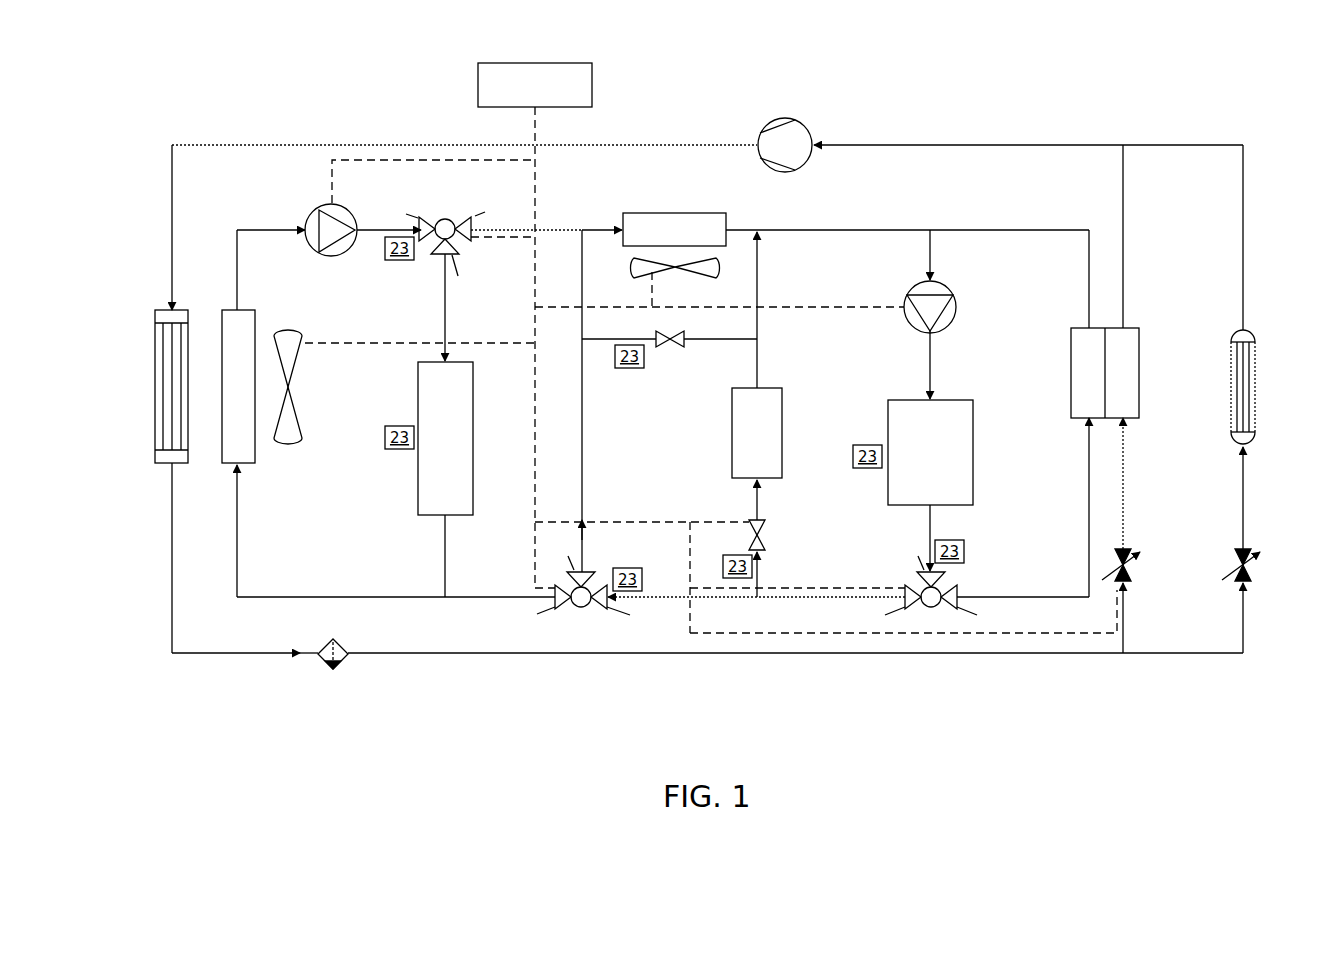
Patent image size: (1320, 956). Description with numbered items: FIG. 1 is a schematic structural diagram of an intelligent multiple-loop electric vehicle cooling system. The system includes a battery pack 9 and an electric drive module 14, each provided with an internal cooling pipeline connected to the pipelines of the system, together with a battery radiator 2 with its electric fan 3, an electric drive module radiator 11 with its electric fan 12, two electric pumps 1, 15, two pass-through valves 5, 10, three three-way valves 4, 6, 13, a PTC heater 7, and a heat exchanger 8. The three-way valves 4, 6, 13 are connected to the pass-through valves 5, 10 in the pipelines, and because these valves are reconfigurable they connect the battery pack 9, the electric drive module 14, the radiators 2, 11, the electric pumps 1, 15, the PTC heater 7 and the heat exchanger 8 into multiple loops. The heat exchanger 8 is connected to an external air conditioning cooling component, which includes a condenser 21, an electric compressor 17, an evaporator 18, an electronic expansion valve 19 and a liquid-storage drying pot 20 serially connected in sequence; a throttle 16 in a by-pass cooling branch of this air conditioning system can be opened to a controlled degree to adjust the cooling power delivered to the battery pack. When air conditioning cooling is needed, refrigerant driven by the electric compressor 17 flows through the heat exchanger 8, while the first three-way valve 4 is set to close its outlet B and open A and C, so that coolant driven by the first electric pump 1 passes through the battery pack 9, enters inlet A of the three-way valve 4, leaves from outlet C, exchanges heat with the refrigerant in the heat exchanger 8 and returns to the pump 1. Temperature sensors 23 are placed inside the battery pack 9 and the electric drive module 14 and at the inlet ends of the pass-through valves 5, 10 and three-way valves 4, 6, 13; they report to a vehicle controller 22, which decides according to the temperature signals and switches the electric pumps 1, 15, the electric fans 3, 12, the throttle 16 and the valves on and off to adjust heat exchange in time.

The electric pump 1 is at (955, 325).
The battery radiator 2 is at (727, 216).
The electric fan 3 is at (683, 272).
The three-way valve 4 is at (945, 585).
The pass-through valve 5 is at (765, 535).
The three-way valve 6 is at (590, 585).
The PTC heater 7 is at (783, 418).
The heat exchanger 8 is at (1070, 390).
The battery pack 9 is at (975, 470).
The pass-through valve 10 is at (690, 341).
The electric drive module radiator 11 is at (256, 465).
The electric fan 12 is at (292, 391).
The three-way valve 13 is at (438, 217).
The electric drive module 14 is at (417, 480).
The electric pump 15 is at (345, 252).
The throttle 16 is at (1133, 574).
The electric compressor 17 is at (812, 135).
The evaporator 18 is at (1255, 410).
The electronic expansion valve 19 is at (1252, 574).
The liquid-storage drying pot 20 is at (345, 660).
The condenser 21 is at (153, 420).
The vehicle controller 22 is at (477, 98).
The temperature sensor 23 is at (674, 414).